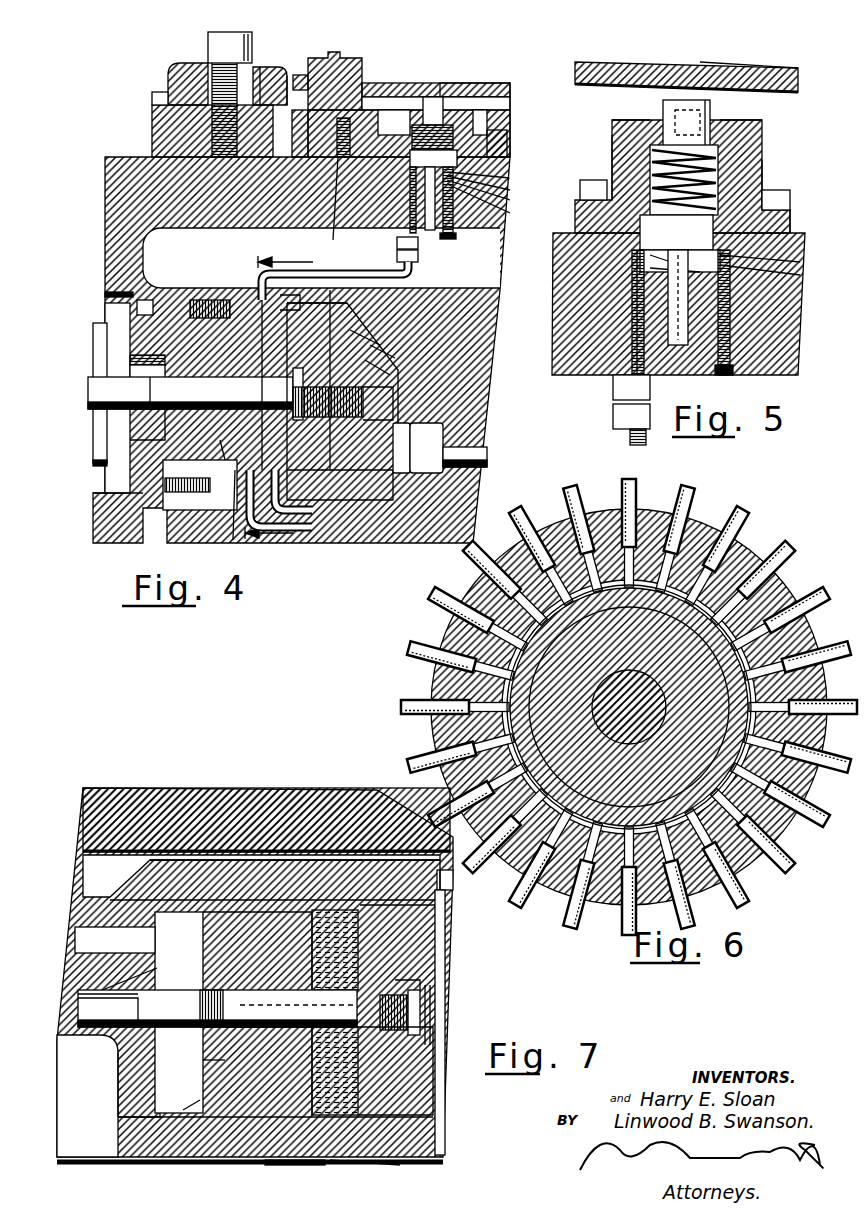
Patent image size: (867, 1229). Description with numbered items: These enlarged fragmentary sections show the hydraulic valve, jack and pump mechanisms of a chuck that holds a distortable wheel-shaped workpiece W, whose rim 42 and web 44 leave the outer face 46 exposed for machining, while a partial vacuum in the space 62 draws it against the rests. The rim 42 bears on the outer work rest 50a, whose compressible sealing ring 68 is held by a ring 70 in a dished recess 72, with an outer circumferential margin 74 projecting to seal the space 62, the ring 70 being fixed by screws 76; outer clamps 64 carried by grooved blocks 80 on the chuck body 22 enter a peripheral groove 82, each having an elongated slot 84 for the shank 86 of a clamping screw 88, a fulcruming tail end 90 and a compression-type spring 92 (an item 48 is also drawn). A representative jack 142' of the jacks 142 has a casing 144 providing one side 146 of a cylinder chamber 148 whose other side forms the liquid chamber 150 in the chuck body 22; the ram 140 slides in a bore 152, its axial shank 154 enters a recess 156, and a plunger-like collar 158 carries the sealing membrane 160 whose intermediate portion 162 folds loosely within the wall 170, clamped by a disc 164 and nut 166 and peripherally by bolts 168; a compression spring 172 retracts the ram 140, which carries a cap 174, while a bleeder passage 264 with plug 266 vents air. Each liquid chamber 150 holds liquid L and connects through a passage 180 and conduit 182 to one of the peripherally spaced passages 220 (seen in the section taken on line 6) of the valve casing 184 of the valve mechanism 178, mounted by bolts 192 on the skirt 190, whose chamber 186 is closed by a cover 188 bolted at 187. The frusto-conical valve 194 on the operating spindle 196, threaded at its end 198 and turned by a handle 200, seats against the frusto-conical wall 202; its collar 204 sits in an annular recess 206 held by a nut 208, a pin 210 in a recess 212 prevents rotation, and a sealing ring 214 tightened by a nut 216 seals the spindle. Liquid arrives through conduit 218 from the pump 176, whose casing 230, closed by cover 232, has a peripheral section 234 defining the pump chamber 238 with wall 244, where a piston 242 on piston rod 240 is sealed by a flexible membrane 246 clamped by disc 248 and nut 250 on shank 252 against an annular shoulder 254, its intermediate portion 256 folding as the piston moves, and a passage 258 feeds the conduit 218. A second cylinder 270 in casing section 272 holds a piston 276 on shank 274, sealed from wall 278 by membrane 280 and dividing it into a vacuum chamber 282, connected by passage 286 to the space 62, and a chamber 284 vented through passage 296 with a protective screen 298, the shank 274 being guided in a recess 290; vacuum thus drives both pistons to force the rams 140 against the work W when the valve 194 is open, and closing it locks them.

In FIG. 4, the chuck body 22 is at (125, 145).
In FIG. 5, the chuck body 22 is at (808, 232).
In FIG. 7, the chuck body 22 is at (274, 786).
In FIG. 4, the rim 42 is at (322, 58).
In FIG. 4, the web 44 is at (455, 83).
In FIG. 5, the web 44 is at (655, 62).
In FIG. 4, the outer face 46 is at (408, 83).
In FIG. 5, the outer face 46 is at (712, 62).
In FIG. 4, the retainer 48 is at (490, 150).
In FIG. 4, the outer work rest 50a is at (383, 118).
In FIG. 4, the vacuum space 62 is at (515, 112).
In FIG. 4, the outer clamp 64 is at (278, 67).
In FIG. 4, the sealing ring 68 is at (343, 120).
In FIG. 4, the ring 70 is at (372, 100).
In FIG. 4, the dished recess 72 is at (289, 133).
In FIG. 4, the outer circumferential margin 74 is at (303, 75).
In FIG. 4, the screws 76 is at (329, 205).
In FIG. 4, the grooved block 80 is at (160, 126).
In FIG. 4, the peripheral groove 82 is at (287, 70).
In FIG. 4, the elongated slot 84 is at (260, 67).
In FIG. 4, the shank 86 is at (215, 75).
In FIG. 4, the clamping screw 88 is at (222, 40).
In FIG. 4, the tail end 90 is at (155, 96).
In FIG. 4, the compression-type spring 92 is at (175, 78).
In FIG. 4, the ram 140 is at (430, 97).
In FIG. 5, the ram 140 is at (668, 115).
In FIG. 4, the jack 142 is at (519, 116).
In FIG. 5, the jack 142' is at (698, 165).
In FIG. 5, the casing 144 is at (735, 120).
In FIG. 5, the side of cylinder chamber 146 is at (740, 200).
In FIG. 5, the cylinder chamber 148 is at (645, 258).
In FIG. 4, the liquid chamber 150 is at (492, 202).
In FIG. 5, the liquid chamber 150 is at (781, 274).
In FIG. 5, the bore 152 is at (618, 120).
In FIG. 4, the axial shank 154 is at (413, 200).
In FIG. 5, the axial shank 154 is at (660, 350).
In FIG. 4, the recess 156 is at (430, 198).
In FIG. 5, the recess 156 is at (688, 340).
In FIG. 4, the plunger-like collar 158 is at (433, 158).
In FIG. 5, the plunger-like collar 158 is at (676, 232).
In FIG. 4, the sealing membrane 160 is at (492, 178).
In FIG. 5, the sealing membrane 160 is at (781, 255).
In FIG. 5, the intermediate portion 162 is at (640, 250).
In FIG. 4, the disc 164 is at (492, 187).
In FIG. 5, the disc 164 is at (660, 268).
In FIG. 4, the nut 166 is at (492, 194).
In FIG. 5, the nut 166 is at (660, 278).
In FIG. 4, the bolts 168 is at (493, 143).
In FIG. 5, the bolts 168 is at (590, 180).
In FIG. 5, the wall of cylinder chamber 170 is at (792, 215).
In FIG. 4, the compression spring 172 is at (480, 118).
In FIG. 5, the compression spring 172 is at (610, 145).
In FIG. 5, the cap 174 is at (700, 100).
In FIG. 7, the liquid pump 176 is at (454, 977).
In FIG. 4, the valve mechanism 178 is at (390, 336).
In FIG. 6, the valve mechanism 178 is at (765, 545).
In FIG. 4, the passage 180 is at (395, 244).
In FIG. 5, the passage 180 is at (630, 300).
In FIG. 4, the conduit 182 is at (335, 290).
In FIG. 5, the conduit 182 is at (630, 425).
In FIG. 6, the conduit 182 is at (530, 510).
In FIG. 4, the valve casing 184 is at (393, 370).
In FIG. 6, the valve casing 184 is at (645, 520).
In FIG. 4, the valve chamber 186 is at (345, 320).
In FIG. 6, the valve chamber 186 is at (745, 620).
In FIG. 4, the bolts 187 is at (178, 492).
In FIG. 4, the cover 188 is at (195, 300).
In FIG. 4, the skirt 190 is at (95, 510).
In FIG. 4, the bolts 192 is at (148, 300).
In FIG. 4, the valve 194 is at (222, 470).
In FIG. 6, the valve 194 is at (790, 605).
In FIG. 4, the operating spindle 196 is at (309, 401).
In FIG. 6, the operating spindle 196 is at (745, 575).
In FIG. 4, the end of spindle 198 is at (382, 355).
In FIG. 4, the handle 200 is at (98, 340).
In FIG. 4, the frusto-conical wall 202 is at (233, 540).
In FIG. 6, the frusto-conical wall 202 is at (690, 530).
In FIG. 7, the frusto-conical wall 202 is at (145, 970).
In FIG. 4, the collar 204 is at (190, 393).
In FIG. 4, the annular recess 206 is at (292, 388).
In FIG. 4, the nut 208 is at (160, 389).
In FIG. 4, the pin 210 is at (370, 329).
In FIG. 4, the recess 212 is at (395, 340).
In FIG. 4, the sealing ring 214 is at (160, 432).
In FIG. 4, the nut 216 is at (147, 366).
In FIG. 4, the conduit 218 is at (468, 447).
In FIG. 4, the passages 220 is at (270, 405).
In FIG. 6, the passages 220 is at (530, 560).
In FIG. 7, the pump casing 230 is at (347, 864).
In FIG. 7, the cover 232 is at (445, 940).
In FIG. 7, the peripheral section 234 is at (380, 1145).
In FIG. 7, the pump chamber 238 is at (370, 935).
In FIG. 7, the piston rod 240 is at (217, 1008).
In FIG. 7, the piston 242 is at (380, 1075).
In FIG. 7, the wall of pump chamber 244 is at (365, 1170).
In FIG. 7, the flexible membrane 246 is at (400, 910).
In FIG. 7, the disc 248 is at (350, 905).
In FIG. 7, the nut 250 is at (405, 985).
In FIG. 7, the shank 252 is at (395, 1010).
In FIG. 7, the annular shoulder 254 is at (420, 1000).
In FIG. 7, the intermediate portion 256 is at (335, 1012).
In FIG. 7, the passage 258 is at (295, 1170).
In FIG. 4, the bleeder passage 264 is at (450, 200).
In FIG. 5, the bleeder passage 264 is at (732, 322).
In FIG. 4, the plug 266 is at (447, 240).
In FIG. 5, the plug 266 is at (733, 375).
In FIG. 7, the cylinder 270 is at (150, 1110).
In FIG. 7, the casing section 272 is at (128, 1063).
In FIG. 7, the shank 274 is at (205, 1000).
In FIG. 7, the piston 276 is at (203, 1068).
In FIG. 7, the wall of cylinder 278 is at (250, 1155).
In FIG. 7, the flexible membrane 280 is at (185, 1105).
In FIG. 7, the vacuum chamber 282 is at (190, 1045).
In FIG. 7, the chamber 284 is at (235, 900).
In FIG. 7, the passage 286 is at (150, 935).
In FIG. 7, the recess 290 is at (100, 1012).
In FIG. 7, the passage 296 is at (428, 1040).
In FIG. 7, the protective screen 298 is at (432, 1022).
In FIG. 4, the section line 6 is at (279, 401).
In FIG. 4, the liquid L is at (395, 232).
In FIG. 5, the liquid L is at (730, 285).
In FIG. 7, the liquid L is at (345, 950).
In FIG. 4, the workpiece W is at (494, 78).
In FIG. 5, the workpiece W is at (765, 62).